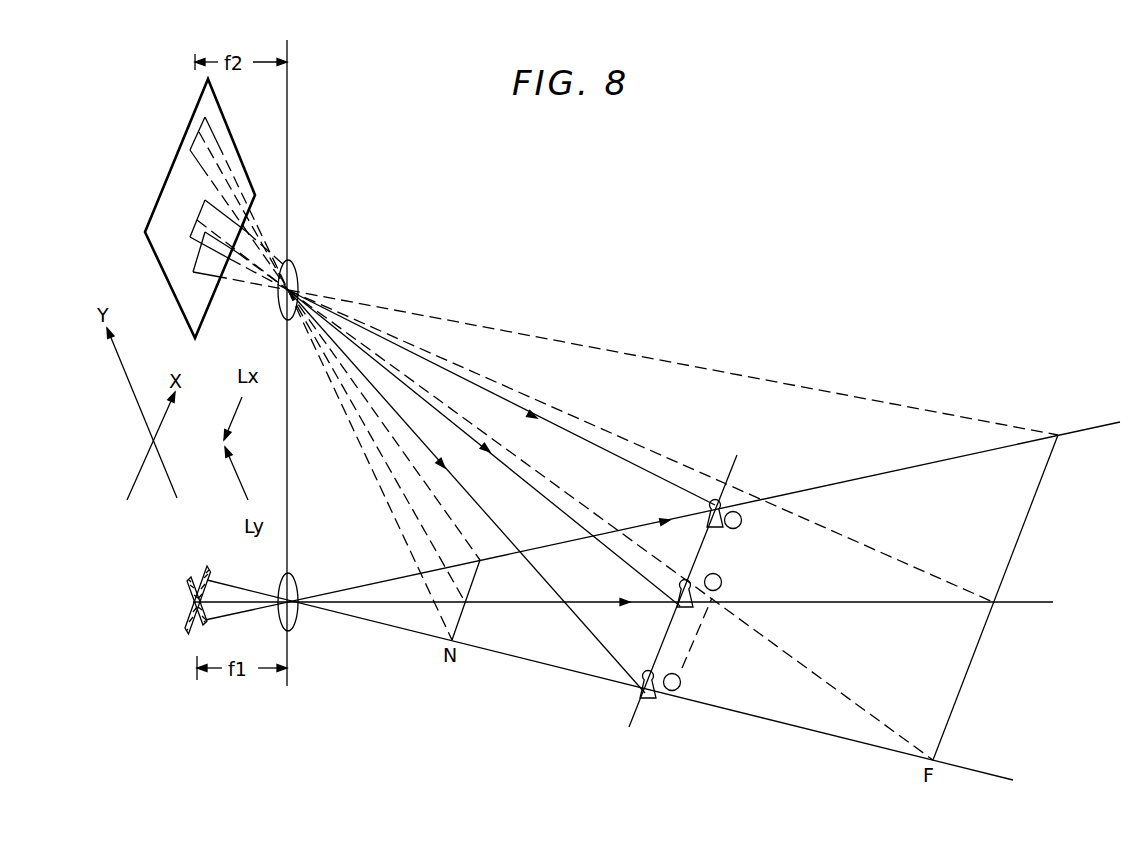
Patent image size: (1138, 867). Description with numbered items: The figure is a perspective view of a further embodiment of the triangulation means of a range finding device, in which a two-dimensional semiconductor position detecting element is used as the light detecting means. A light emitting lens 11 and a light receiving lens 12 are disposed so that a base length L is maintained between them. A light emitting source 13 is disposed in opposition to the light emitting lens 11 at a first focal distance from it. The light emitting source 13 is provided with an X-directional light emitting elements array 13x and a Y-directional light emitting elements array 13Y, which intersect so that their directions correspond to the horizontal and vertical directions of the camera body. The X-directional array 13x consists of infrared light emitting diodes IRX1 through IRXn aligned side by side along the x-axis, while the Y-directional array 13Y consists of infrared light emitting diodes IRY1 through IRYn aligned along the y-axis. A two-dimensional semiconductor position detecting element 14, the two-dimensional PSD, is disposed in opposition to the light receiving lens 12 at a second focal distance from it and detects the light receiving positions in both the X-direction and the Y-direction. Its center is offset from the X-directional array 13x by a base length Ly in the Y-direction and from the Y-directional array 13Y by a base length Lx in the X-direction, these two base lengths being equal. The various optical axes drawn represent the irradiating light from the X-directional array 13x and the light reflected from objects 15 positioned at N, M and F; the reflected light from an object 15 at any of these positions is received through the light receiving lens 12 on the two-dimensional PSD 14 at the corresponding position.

The light emitting lens 11 is at (297, 583).
The light receiving lens 12 is at (297, 274).
The light emitting source 13 is at (175, 588).
The X-directional light emitting elements array 13x is at (190, 612).
The Y-directional light emitting elements array 13Y is at (185, 587).
The two-dimensional semiconductor position detecting element 14 is at (178, 153).
The object 15 is at (645, 668).
The infrared light emitting diode IRX1 is at (183, 630).
The infrared light emitting diode IRXn is at (205, 577).
The infrared light emitting diode IRY1 is at (187, 590).
The infrared light emitting diode IRYn is at (202, 620).